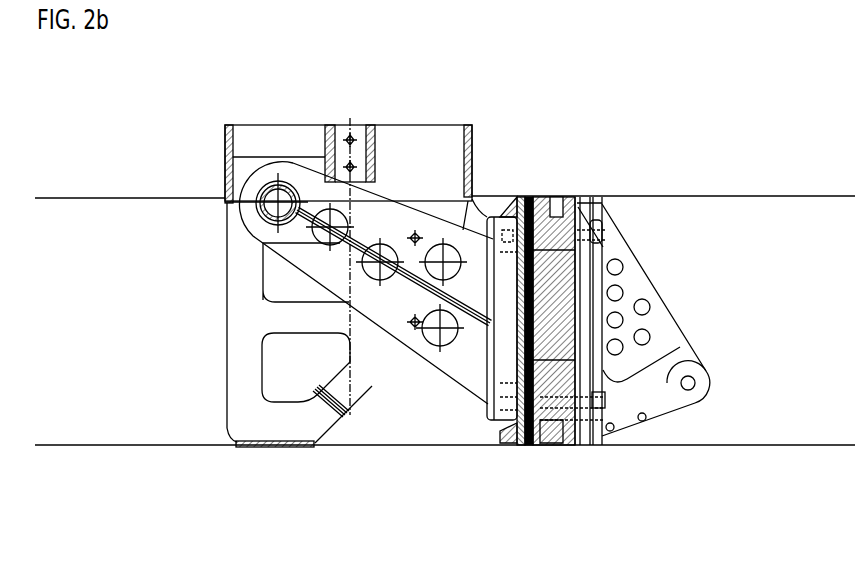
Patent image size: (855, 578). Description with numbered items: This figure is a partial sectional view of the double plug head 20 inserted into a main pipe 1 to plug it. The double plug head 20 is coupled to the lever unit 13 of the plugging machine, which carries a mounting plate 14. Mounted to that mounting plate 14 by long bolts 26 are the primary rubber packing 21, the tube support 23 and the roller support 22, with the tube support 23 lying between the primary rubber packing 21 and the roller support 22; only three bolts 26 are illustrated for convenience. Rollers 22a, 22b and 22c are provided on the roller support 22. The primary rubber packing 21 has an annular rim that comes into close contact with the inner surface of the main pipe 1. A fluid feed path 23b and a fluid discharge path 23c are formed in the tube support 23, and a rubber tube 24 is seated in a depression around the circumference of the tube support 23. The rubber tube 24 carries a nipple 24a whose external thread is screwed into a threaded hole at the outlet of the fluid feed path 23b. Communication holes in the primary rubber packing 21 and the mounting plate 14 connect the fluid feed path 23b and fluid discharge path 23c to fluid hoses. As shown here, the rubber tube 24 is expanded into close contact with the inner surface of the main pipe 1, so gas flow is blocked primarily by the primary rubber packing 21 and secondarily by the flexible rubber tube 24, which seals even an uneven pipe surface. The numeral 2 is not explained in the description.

The main pipe 1 is at (197, 447).
The upper housing block 2 is at (212, 157).
The lever unit 13 is at (428, 360).
The mounting plate 14 is at (488, 407).
The double plug head 20 is at (576, 174).
The primary rubber packing 21 is at (514, 199).
The roller support 22 is at (641, 273).
The roller 22a is at (700, 398).
The roller 22b is at (643, 422).
The roller 22c is at (607, 432).
The tube support 23 is at (582, 224).
The fluid feed path 23b is at (537, 199).
The fluid discharge path 23c is at (520, 447).
The rubber tube 24 is at (553, 440).
The nipple 24a is at (580, 220).
The long bolt 26 is at (608, 240).